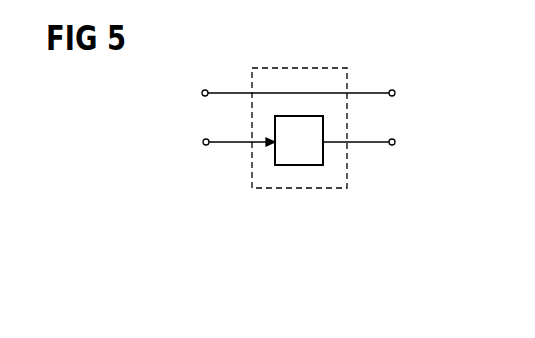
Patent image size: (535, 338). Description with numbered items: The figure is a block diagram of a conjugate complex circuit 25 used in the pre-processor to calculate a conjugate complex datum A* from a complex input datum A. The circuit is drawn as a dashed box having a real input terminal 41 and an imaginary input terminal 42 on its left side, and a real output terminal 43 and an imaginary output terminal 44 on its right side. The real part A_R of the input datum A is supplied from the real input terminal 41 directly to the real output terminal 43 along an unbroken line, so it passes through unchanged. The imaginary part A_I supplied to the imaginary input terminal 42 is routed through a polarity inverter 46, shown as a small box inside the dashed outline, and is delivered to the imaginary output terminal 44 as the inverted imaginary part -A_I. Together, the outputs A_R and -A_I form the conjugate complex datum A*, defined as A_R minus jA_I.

The conjugate complex circuit 25 is at (322, 68).
The real input terminal 41 is at (201, 89).
The imaginary input terminal 42 is at (200, 138).
The real output terminal 43 is at (395, 95).
The imaginary output terminal 44 is at (394, 145).
The polarity inverter 46 is at (293, 166).